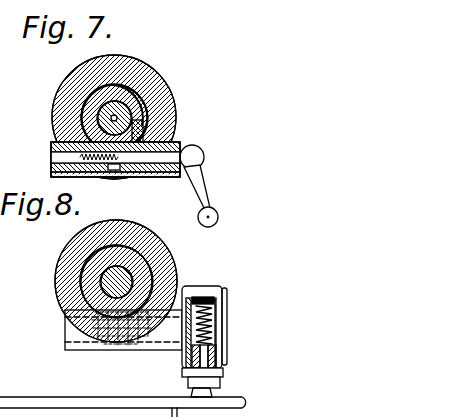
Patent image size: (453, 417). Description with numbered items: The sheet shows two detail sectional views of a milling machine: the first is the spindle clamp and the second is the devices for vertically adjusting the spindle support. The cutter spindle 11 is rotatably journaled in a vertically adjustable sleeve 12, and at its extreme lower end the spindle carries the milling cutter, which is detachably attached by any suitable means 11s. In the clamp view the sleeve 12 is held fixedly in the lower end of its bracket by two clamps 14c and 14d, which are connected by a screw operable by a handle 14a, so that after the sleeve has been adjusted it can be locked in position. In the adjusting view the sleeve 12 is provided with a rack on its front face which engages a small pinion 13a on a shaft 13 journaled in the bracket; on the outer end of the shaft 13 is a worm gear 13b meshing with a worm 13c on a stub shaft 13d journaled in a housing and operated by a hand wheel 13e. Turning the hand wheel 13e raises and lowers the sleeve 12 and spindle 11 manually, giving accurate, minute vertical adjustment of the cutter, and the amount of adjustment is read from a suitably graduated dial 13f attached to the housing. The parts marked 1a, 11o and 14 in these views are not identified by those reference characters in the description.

In FIG. 7, the frame 1a is at (53, 110).
In FIG. 8, the frame 1a is at (68, 318).
In FIG. 8, the cutter spindle 11 is at (131, 276).
In FIG. 7, the means for detachably attaching the milling cutter 11s is at (90, 108).
In FIG. 7, the opening 11o is at (138, 118).
In FIG. 7, the vertically adjustable sleeve 12 is at (146, 93).
In FIG. 8, the vertically adjustable sleeve 12 is at (147, 279).
In FIG. 8, the shaft 13 is at (158, 344).
In FIG. 8, the small pinion 13a is at (110, 340).
In FIG. 8, the worm gear 13b is at (207, 303).
In FIG. 8, the worm 13c is at (213, 325).
In FIG. 8, the stub shaft 13d is at (217, 355).
In FIG. 8, the hand wheel 13e is at (249, 403).
In FIG. 8, the graduated dial 13f is at (223, 372).
In FIG. 7, the slide 14 is at (133, 160).
In FIG. 7, the handle 14a is at (204, 181).
In FIG. 7, the clamp 14c is at (53, 168).
In FIG. 7, the clamp 14d is at (163, 177).